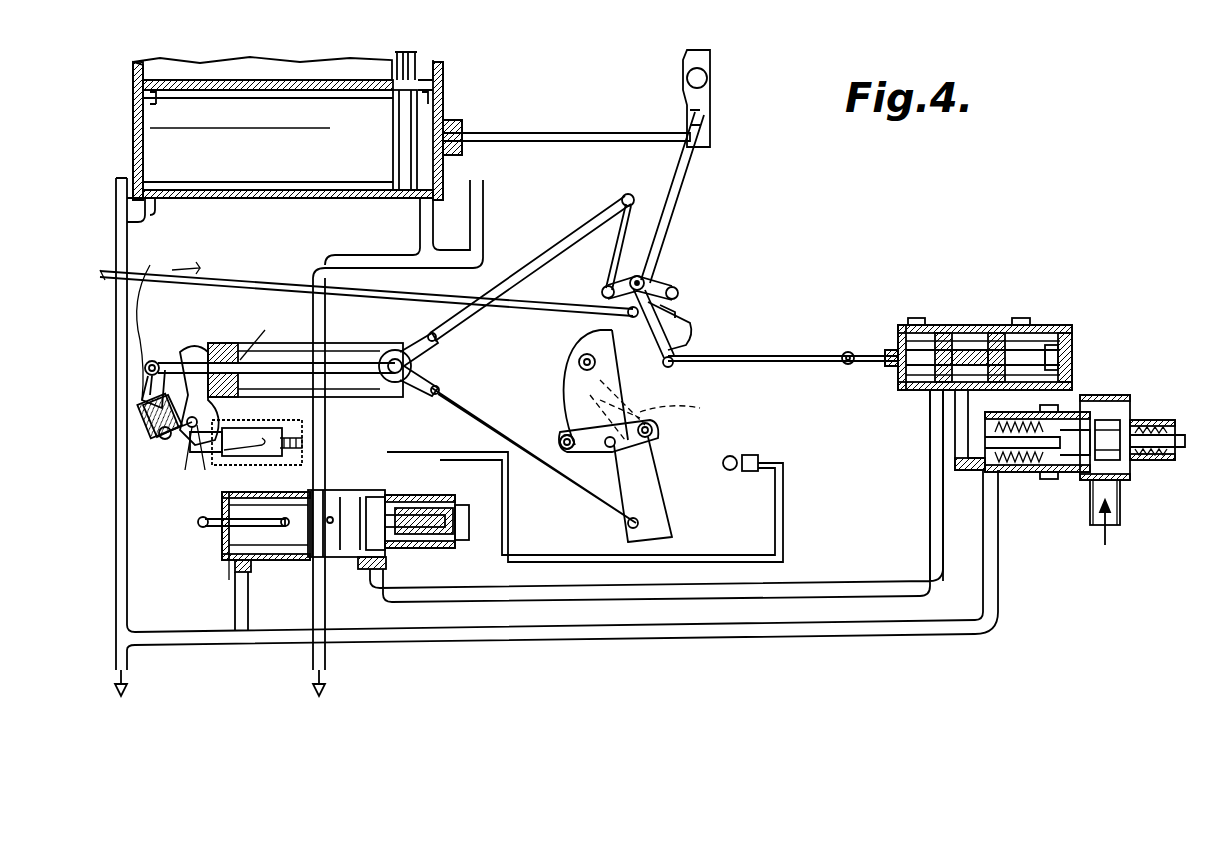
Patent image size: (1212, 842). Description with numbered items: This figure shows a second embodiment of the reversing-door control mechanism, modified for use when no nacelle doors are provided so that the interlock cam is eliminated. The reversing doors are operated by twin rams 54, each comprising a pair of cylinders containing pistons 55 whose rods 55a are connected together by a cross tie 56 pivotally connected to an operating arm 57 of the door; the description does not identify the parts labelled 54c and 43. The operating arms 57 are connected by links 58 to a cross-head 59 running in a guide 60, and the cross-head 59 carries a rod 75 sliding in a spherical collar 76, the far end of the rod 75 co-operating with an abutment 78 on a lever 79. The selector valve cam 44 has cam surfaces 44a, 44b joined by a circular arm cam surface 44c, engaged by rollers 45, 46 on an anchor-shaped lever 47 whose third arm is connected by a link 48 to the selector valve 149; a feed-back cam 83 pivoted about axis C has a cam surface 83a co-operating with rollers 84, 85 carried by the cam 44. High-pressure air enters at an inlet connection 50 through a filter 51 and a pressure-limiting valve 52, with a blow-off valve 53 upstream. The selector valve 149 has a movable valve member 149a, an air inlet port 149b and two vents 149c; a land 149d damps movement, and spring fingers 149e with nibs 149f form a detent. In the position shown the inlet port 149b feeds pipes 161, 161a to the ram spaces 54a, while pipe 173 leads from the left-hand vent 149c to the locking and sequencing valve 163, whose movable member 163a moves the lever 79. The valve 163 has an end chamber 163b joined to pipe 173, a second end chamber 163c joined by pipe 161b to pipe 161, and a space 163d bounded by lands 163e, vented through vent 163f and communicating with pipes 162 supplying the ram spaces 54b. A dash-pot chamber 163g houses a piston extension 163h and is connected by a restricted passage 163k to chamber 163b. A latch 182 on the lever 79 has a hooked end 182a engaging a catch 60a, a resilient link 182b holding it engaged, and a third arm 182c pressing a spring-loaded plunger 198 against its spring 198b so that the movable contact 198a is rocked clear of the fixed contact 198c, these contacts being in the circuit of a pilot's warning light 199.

The twin ram 54 is at (330, 195).
The ram space 54a is at (282, 70).
The ram space 54b is at (420, 70).
The cylinder ports 54c is at (155, 100).
The piston 55 is at (395, 148).
The piston rod 55a is at (650, 133).
The cross tie 56 is at (712, 105).
The operating arm 57 is at (664, 193).
The link 58 is at (550, 245).
The cross-head 59 is at (425, 383).
The guide 60 is at (372, 343).
The catch 60a is at (195, 348).
The rod 75 is at (340, 360).
The spherical collar 76 is at (225, 345).
The abutment 78 is at (152, 358).
The lever 79 is at (192, 430).
The rod 43 is at (558, 306).
The selector valve cam 44 is at (680, 338).
The cam surface 44a is at (695, 330).
The cam surface 44b is at (625, 314).
The circular arm cam surface 44c is at (690, 312).
The roller 45 is at (680, 293).
The roller 46 is at (604, 283).
The anchor-shaped lever 47 is at (650, 280).
The link 48 is at (772, 362).
The feed-back cam 83 is at (590, 404).
The cam surface 83a is at (684, 405).
The roller 84 is at (655, 430).
The roller 85 is at (576, 450).
The pipe 161 is at (535, 636).
The pipe 161a is at (122, 578).
The pipe 161b is at (248, 632).
The pipes 162 is at (420, 248).
The locking and sequencing valve 163 is at (222, 560).
The movable member 163a is at (345, 495).
The end chamber 163b is at (378, 497).
The second end chamber 163c is at (245, 565).
The space 163d is at (375, 560).
The lands 163e is at (250, 558).
The vent 163f is at (332, 516).
The dash-pot chamber 163g is at (405, 508).
The piston extension 163h is at (448, 503).
The restricted passage 163k is at (462, 535).
The pipe 173 is at (858, 582).
The latch 182 is at (160, 432).
The hooked end 182a is at (277, 330).
The resilient link 182b is at (150, 319).
The third arm 182c is at (170, 440).
The spring-loaded plunger 198 is at (200, 522).
The movable contact 198a is at (222, 500).
The spring 198b is at (222, 540).
The fixed contact 198c is at (290, 440).
The pilot's warning light 199 is at (736, 458).
The selector valve 149 is at (980, 318).
The movable valve member 149a is at (980, 345).
The air inlet port 149b is at (960, 382).
The vents 149c is at (912, 318).
The land 149d is at (1060, 372).
The spring fingers 149e is at (1072, 355).
The nibs 149f is at (1072, 340).
The inlet connection 50 is at (1090, 500).
The filter 51 is at (1130, 400).
The pressure-limiting valve 52 is at (1022, 472).
The blow-off valve 53 is at (1168, 435).